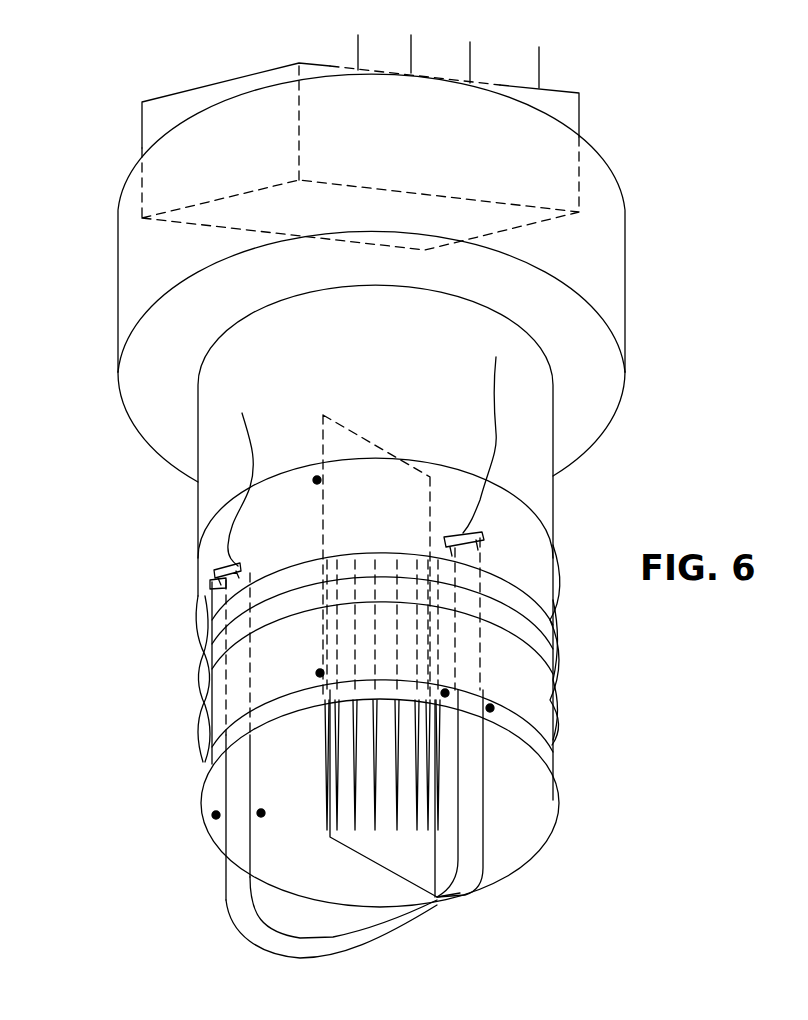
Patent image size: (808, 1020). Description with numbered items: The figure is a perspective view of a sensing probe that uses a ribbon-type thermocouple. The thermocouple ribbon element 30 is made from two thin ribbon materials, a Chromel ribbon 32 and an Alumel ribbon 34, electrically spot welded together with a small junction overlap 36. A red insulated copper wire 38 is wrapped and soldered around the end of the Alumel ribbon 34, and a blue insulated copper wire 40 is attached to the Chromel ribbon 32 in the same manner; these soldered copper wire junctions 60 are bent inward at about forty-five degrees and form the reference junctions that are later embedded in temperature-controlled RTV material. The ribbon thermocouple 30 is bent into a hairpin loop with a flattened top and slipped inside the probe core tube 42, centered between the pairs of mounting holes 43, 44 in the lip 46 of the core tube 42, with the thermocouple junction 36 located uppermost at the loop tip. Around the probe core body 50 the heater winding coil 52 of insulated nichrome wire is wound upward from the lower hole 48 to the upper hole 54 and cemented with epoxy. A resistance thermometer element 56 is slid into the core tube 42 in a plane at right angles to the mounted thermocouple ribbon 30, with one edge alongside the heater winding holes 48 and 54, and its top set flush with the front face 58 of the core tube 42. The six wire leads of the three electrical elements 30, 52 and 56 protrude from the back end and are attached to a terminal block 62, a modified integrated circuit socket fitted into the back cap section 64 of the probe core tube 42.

The thermocouple ribbon element 30 is at (483, 877).
The Chromel ribbon 32 is at (478, 636).
The Alumel ribbon 34 is at (210, 589).
The junction overlap 36 is at (363, 932).
The red insulated copper wire 38 is at (251, 421).
The blue insulated copper wire 40 is at (492, 392).
The probe core tube 42 is at (196, 491).
The support rods 43 is at (213, 817).
The mounting holes 44 is at (445, 697).
The lip 46 is at (557, 760).
The lower hole 48 is at (316, 673).
The probe core body 50 is at (554, 606).
The heater winding coil 52 is at (205, 645).
The upper hole 54 is at (313, 481).
The resistance thermometer element 56 is at (330, 750).
The front face 58 is at (535, 845).
The copper wire junctions 60 is at (242, 565).
The terminal block 62 is at (583, 138).
The back cap section 64 is at (627, 246).